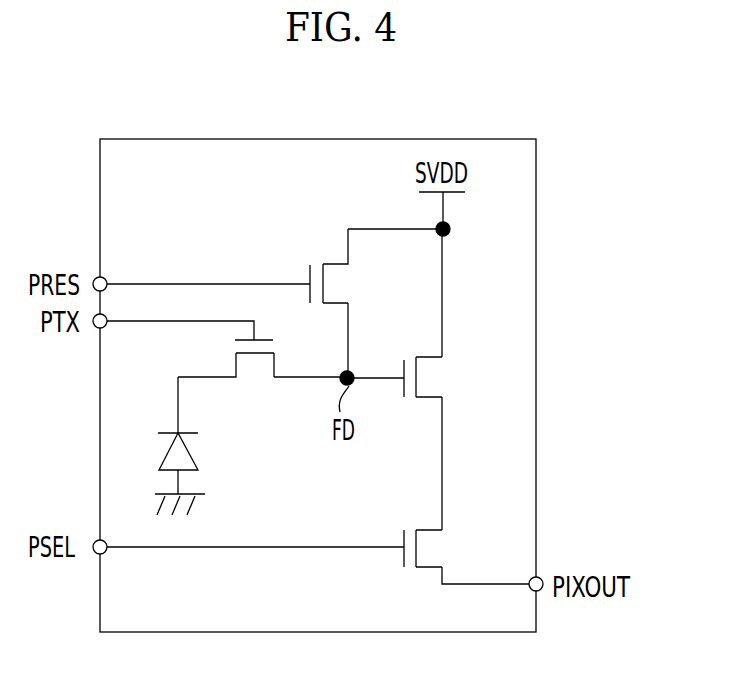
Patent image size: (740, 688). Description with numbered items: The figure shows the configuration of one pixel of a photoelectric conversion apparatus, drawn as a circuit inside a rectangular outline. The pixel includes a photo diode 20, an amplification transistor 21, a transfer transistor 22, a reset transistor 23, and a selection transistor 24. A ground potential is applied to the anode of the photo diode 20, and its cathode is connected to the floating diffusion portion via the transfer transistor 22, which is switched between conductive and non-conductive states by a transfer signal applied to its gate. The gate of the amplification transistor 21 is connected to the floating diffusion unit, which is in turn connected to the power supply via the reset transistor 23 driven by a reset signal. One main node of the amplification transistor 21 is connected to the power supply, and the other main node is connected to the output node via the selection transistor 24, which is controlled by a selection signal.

The photo diode 20 is at (195, 462).
The amplification transistor 21 is at (432, 380).
The transfer transistor 22 is at (234, 356).
The reset transistor 23 is at (308, 277).
The selection transistor 24 is at (429, 568).